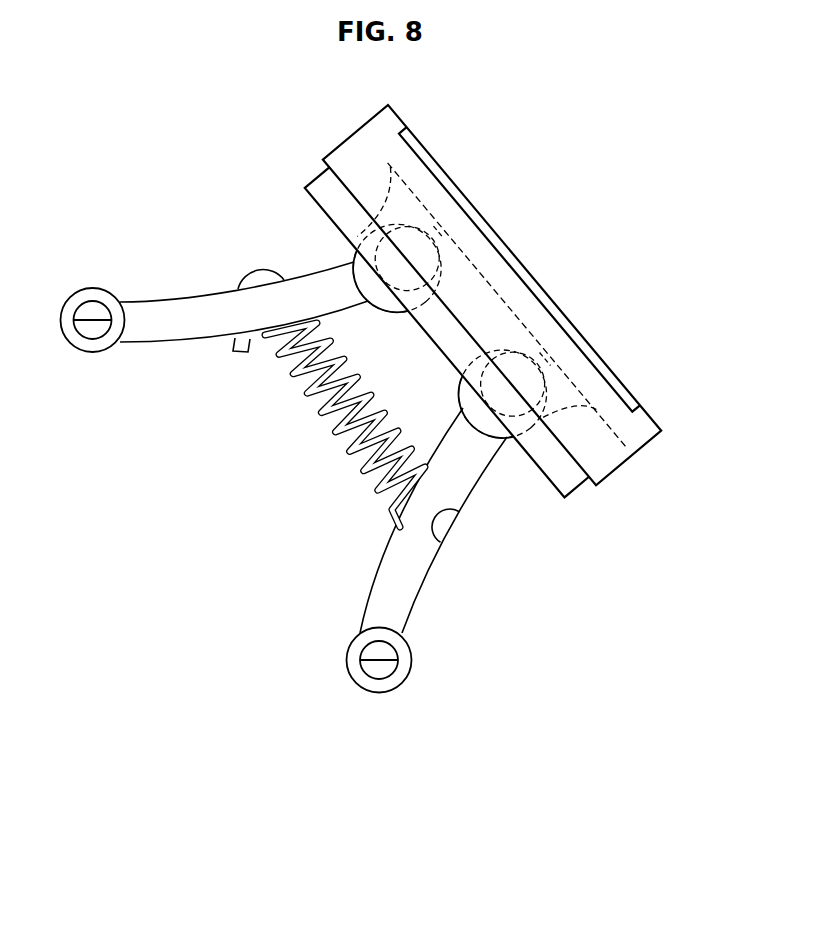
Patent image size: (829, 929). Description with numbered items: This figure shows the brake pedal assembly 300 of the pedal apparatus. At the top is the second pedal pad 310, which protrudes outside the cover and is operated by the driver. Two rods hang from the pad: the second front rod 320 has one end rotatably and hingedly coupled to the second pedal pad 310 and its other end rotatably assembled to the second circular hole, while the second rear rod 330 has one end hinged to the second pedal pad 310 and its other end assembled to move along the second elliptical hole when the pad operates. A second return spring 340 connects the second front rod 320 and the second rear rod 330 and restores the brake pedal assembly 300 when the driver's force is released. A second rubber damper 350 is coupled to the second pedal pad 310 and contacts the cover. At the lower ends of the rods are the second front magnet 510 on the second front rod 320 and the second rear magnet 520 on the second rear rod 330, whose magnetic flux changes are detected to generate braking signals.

The brake pedal assembly 300 is at (606, 358).
The second pedal pad 310 is at (522, 295).
The second front rod 320 is at (195, 315).
The second rear rod 330 is at (400, 606).
The second return spring 340 is at (338, 432).
The second rubber damper 350 is at (547, 465).
The second front magnet 510 is at (93, 320).
The second rear magnet 520 is at (378, 660).